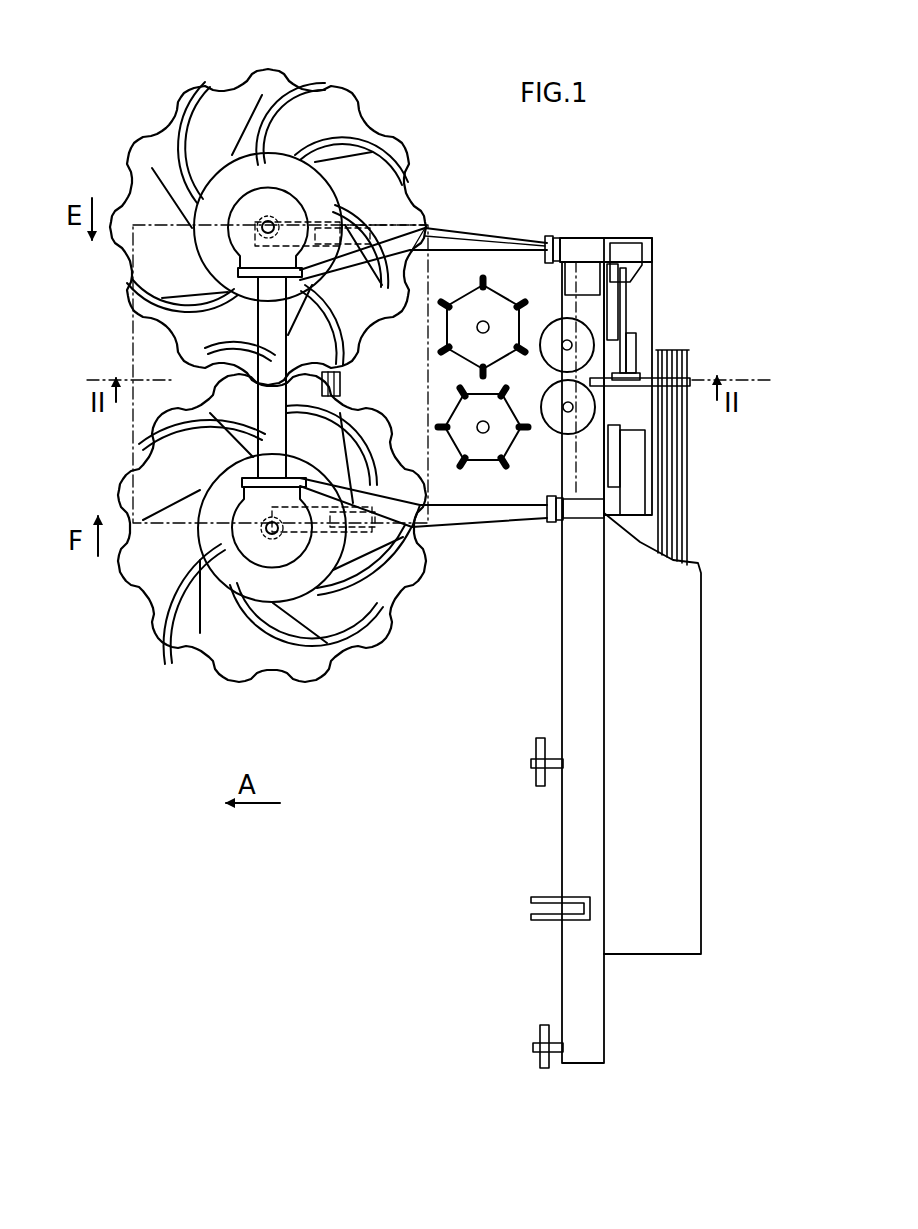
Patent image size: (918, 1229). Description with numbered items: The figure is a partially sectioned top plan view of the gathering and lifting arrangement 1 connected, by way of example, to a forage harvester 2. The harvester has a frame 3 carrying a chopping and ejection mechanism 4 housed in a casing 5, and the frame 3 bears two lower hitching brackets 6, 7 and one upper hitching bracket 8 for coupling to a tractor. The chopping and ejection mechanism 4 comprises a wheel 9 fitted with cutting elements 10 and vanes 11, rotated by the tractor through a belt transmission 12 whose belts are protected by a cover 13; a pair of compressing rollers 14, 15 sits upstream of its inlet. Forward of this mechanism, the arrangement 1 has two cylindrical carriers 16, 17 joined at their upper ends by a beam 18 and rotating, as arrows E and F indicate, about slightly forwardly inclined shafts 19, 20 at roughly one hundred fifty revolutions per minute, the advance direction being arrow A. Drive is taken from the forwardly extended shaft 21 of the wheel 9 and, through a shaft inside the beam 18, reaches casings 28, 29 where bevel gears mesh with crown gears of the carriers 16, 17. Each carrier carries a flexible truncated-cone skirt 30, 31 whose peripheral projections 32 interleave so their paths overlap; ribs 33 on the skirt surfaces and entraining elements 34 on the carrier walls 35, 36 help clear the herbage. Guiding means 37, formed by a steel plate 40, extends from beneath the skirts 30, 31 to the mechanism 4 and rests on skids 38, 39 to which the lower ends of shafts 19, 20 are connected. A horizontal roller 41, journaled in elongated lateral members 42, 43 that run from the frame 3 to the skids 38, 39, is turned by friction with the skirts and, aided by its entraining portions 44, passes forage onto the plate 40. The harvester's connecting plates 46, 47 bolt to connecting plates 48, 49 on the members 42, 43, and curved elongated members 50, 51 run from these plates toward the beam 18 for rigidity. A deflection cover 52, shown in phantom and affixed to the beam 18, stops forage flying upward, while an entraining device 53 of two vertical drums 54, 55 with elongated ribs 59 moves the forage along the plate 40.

The gathering and lifting arrangement 1 is at (190, 92).
The forage harvester 2 is at (658, 290).
The frame 3 is at (585, 660).
The chopping and ejection mechanism 4 is at (630, 332).
The casing 5 is at (656, 256).
The lower hitching bracket 6 is at (538, 750).
The lower hitching bracket 7 is at (538, 1038).
The upper hitching bracket 8 is at (530, 898).
The wheel 9 is at (636, 366).
The cutting elements 10 is at (612, 264).
The vanes 11 is at (632, 256).
The belt transmission 12 is at (682, 426).
The cover 13 is at (680, 606).
The compressing roller 14 is at (564, 338).
The compressing roller 15 is at (560, 422).
The cylindrical carrier 16 is at (250, 110).
The cylindrical carrier 17 is at (226, 575).
The beam 18 is at (262, 345).
The shaft 19 is at (270, 222).
The shaft 20 is at (268, 535).
The shaft 21 is at (652, 380).
The casing 28 is at (245, 205).
The casing 29 is at (240, 532).
The flexible deformable skirt 30 is at (288, 114).
The flexible deformable skirt 31 is at (286, 645).
The projections 32 is at (375, 122).
The ribs 33 is at (322, 84).
The entraining elements 34 is at (372, 157).
The wall 35 is at (205, 180).
The wall 36 is at (322, 592).
The guiding means 37 is at (497, 238).
The skid 38 is at (328, 220).
The skid 39 is at (345, 540).
The plate 40 is at (521, 482).
The roller 41 is at (340, 392).
The elongated lateral member 42 is at (452, 236).
The elongated lateral member 43 is at (440, 522).
The entraining portions 44 is at (334, 380).
The connecting plate 46 is at (558, 238).
The connecting plate 47 is at (560, 522).
The connecting plate 48 is at (548, 236).
The connecting plate 49 is at (549, 522).
The curved elongated member 50 is at (427, 240).
The curved elongated member 51 is at (470, 510).
The deflection cover 52 is at (132, 424).
The entraining device 53 is at (495, 290).
The drum 54 is at (470, 308).
The drum 55 is at (484, 450).
The elongated ribs 59 is at (504, 362).